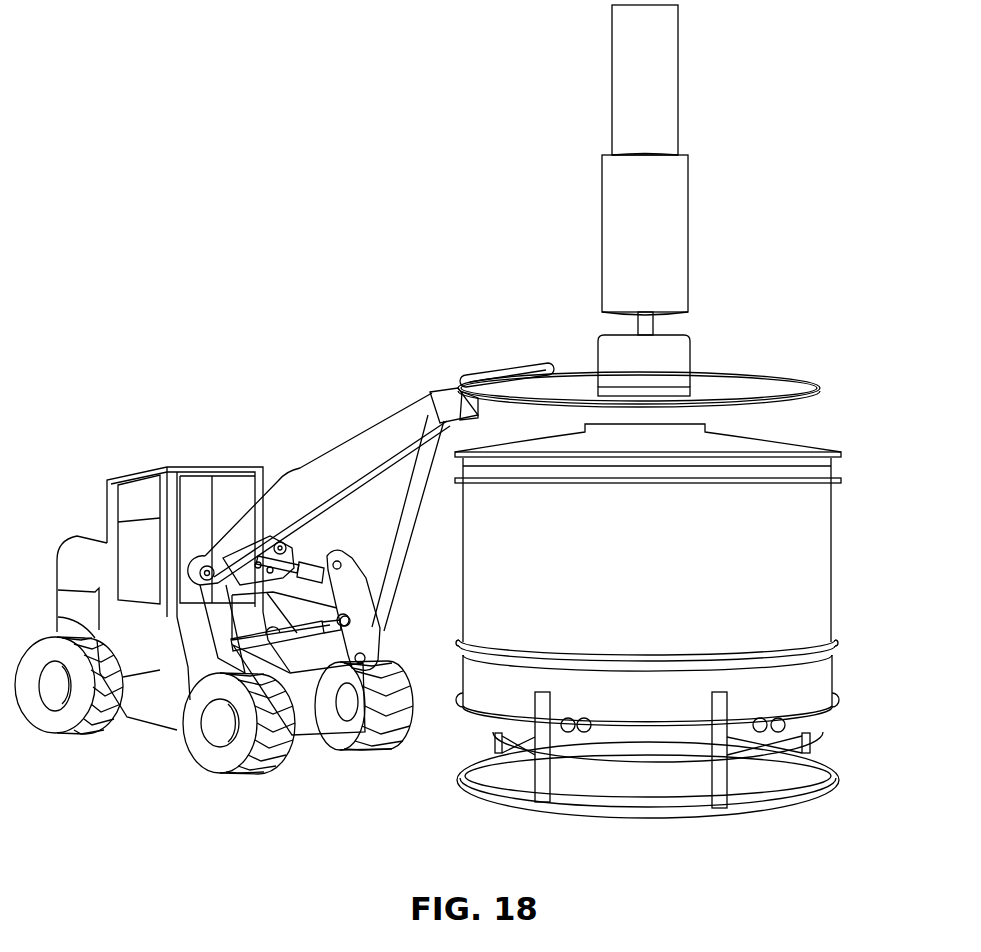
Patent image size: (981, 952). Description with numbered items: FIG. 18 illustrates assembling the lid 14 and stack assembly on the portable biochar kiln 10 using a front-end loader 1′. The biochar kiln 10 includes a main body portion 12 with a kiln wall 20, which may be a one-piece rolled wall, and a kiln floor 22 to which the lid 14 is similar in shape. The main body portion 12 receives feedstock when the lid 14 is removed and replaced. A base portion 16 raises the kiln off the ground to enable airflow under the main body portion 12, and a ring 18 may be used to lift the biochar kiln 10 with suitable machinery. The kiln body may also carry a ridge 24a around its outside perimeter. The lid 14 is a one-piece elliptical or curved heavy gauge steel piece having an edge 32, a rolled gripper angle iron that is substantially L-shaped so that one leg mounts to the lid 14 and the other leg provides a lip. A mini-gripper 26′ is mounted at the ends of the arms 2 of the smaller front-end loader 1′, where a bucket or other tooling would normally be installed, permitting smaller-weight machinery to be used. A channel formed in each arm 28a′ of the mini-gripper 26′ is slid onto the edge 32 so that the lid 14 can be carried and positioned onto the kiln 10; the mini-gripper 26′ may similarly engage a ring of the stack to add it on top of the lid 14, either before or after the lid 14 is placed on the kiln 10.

The biochar kiln 10 is at (840, 314).
The main body portion 12 is at (832, 557).
The lid 14 is at (748, 442).
The base portion 16 is at (773, 808).
The ring 18 is at (467, 752).
The kiln wall 20 is at (666, 574).
The kiln floor 22 is at (653, 762).
The ring 24a is at (838, 643).
The edge 32 is at (842, 452).
The mini-gripper 26′ is at (428, 371).
The arm 28a′ is at (502, 372).
The front-end loader 1′ is at (133, 442).
The arms 2 is at (392, 527).